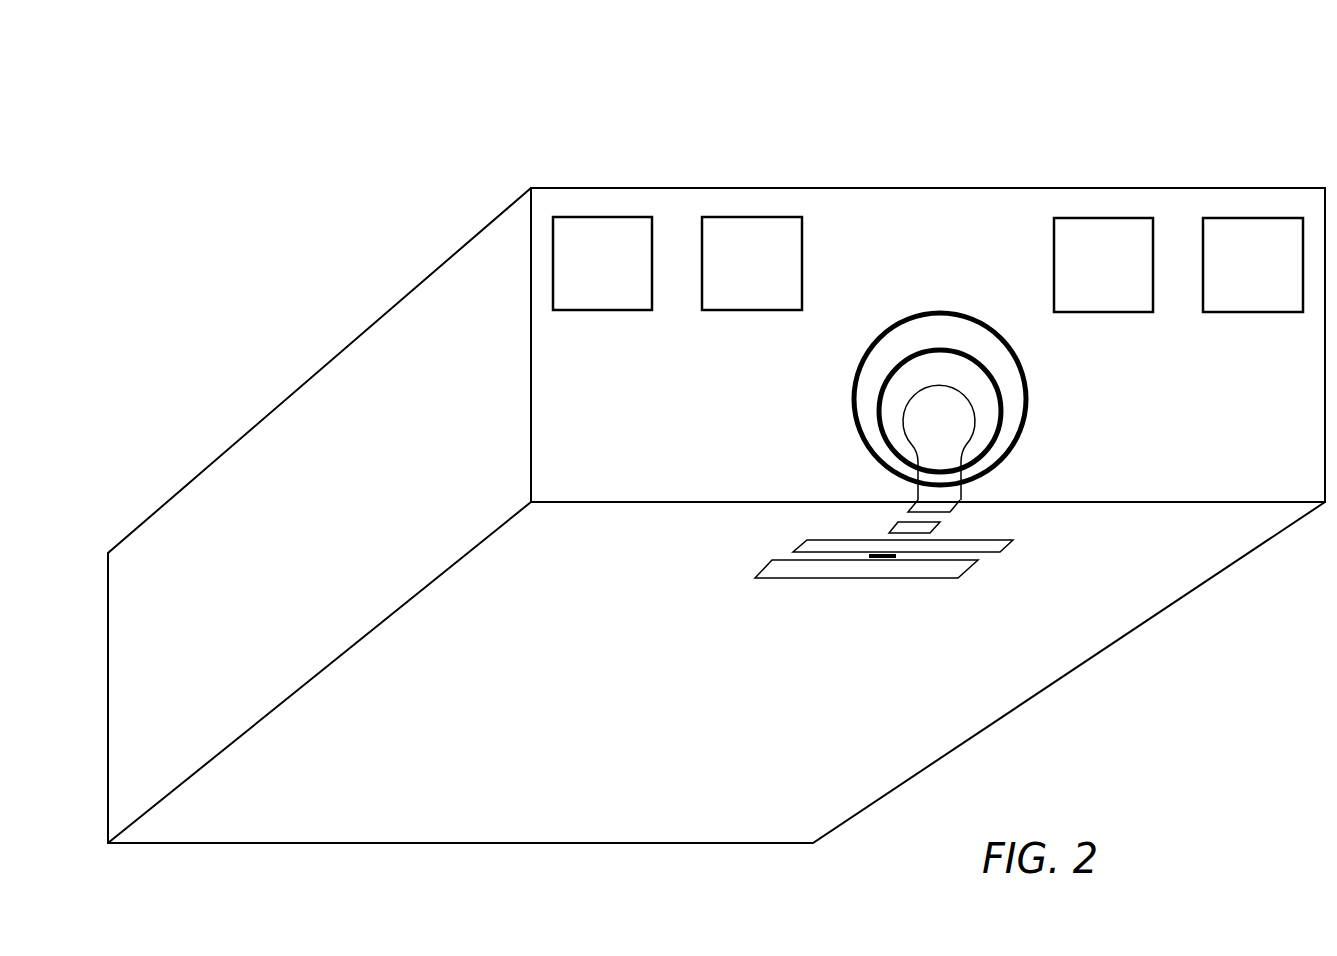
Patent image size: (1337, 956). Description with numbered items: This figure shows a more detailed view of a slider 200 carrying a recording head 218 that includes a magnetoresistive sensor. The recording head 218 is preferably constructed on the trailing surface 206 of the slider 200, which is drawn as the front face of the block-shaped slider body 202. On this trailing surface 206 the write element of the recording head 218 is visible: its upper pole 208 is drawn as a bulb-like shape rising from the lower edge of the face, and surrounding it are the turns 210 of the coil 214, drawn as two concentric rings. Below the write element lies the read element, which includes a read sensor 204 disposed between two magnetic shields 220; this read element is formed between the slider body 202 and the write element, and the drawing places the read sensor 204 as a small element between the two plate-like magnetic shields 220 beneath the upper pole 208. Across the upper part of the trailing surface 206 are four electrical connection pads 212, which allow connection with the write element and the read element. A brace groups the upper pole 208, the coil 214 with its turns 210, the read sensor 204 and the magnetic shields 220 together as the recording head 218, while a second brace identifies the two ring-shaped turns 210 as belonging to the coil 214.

The slider 200 is at (247, 219).
The slider body 202 is at (430, 300).
The read sensor 204 is at (877, 560).
The trailing surface 206 is at (935, 210).
The upper pole 208 is at (952, 493).
The turns 210 is at (913, 357).
The electrical connection pads 212 is at (1228, 225).
The coil 214 is at (1043, 350).
The recording head 218 is at (730, 578).
The magnetic shields 220 is at (963, 570).